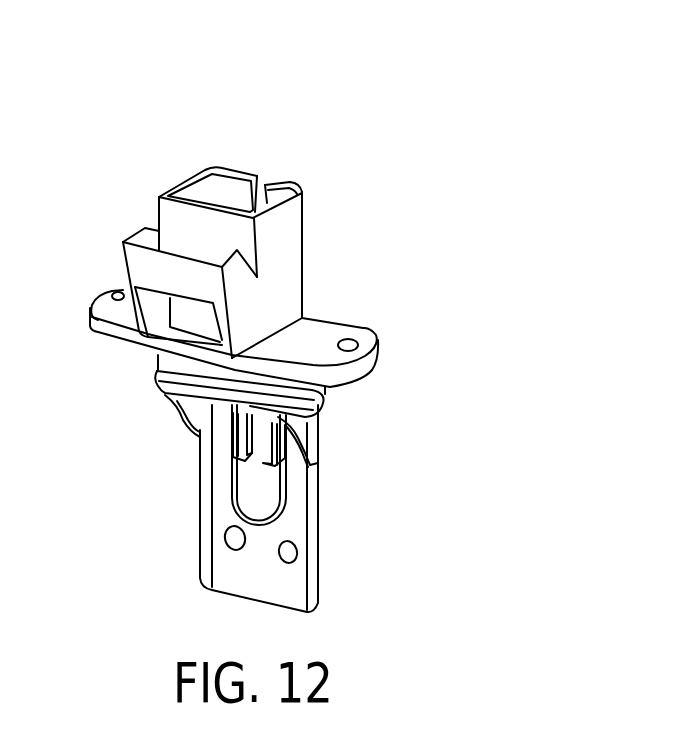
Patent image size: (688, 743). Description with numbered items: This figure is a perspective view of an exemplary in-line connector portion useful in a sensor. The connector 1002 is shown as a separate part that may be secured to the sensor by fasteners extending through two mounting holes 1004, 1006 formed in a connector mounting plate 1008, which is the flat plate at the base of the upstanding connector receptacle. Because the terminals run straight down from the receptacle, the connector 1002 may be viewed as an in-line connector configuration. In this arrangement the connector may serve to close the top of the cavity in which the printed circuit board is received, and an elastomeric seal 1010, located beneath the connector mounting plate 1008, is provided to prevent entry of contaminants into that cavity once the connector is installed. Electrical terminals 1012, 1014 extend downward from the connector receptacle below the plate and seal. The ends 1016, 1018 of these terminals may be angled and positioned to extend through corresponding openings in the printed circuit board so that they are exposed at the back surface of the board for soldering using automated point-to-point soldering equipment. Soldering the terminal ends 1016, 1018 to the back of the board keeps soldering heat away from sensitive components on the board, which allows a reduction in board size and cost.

The connector 1002 is at (349, 184).
The mounting hole 1004 is at (349, 345).
The mounting hole 1006 is at (121, 292).
The connector mounting plate 1008 is at (322, 320).
The elastomeric seal 1010 is at (330, 399).
The electrical terminal 1012 is at (245, 435).
The electrical terminal 1014 is at (289, 462).
The end of terminal 1016 is at (243, 463).
The end of terminal 1018 is at (267, 463).